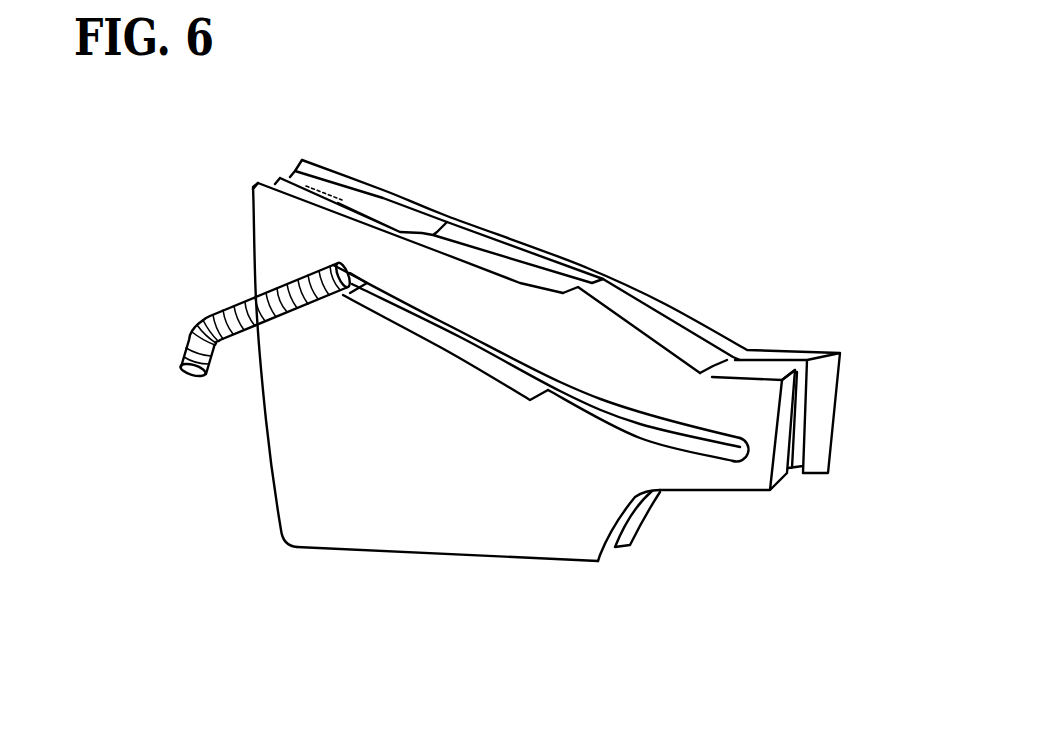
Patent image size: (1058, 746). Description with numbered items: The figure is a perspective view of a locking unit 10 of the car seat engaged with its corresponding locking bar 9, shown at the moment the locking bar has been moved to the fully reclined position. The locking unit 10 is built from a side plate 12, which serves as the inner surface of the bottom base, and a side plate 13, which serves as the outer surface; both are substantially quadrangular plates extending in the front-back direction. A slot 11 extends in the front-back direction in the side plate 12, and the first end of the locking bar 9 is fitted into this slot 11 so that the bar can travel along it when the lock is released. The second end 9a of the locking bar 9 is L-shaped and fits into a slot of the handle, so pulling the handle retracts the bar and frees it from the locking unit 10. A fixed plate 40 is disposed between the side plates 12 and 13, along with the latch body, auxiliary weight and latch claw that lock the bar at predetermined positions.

The locking unit 10 is at (660, 246).
The fixed plate 40 is at (288, 172).
The slot 11 is at (459, 345).
The locking bar 9 is at (265, 340).
The second end 9a is at (214, 345).
The side plate 12 is at (490, 531).
The side plate 13 is at (638, 515).